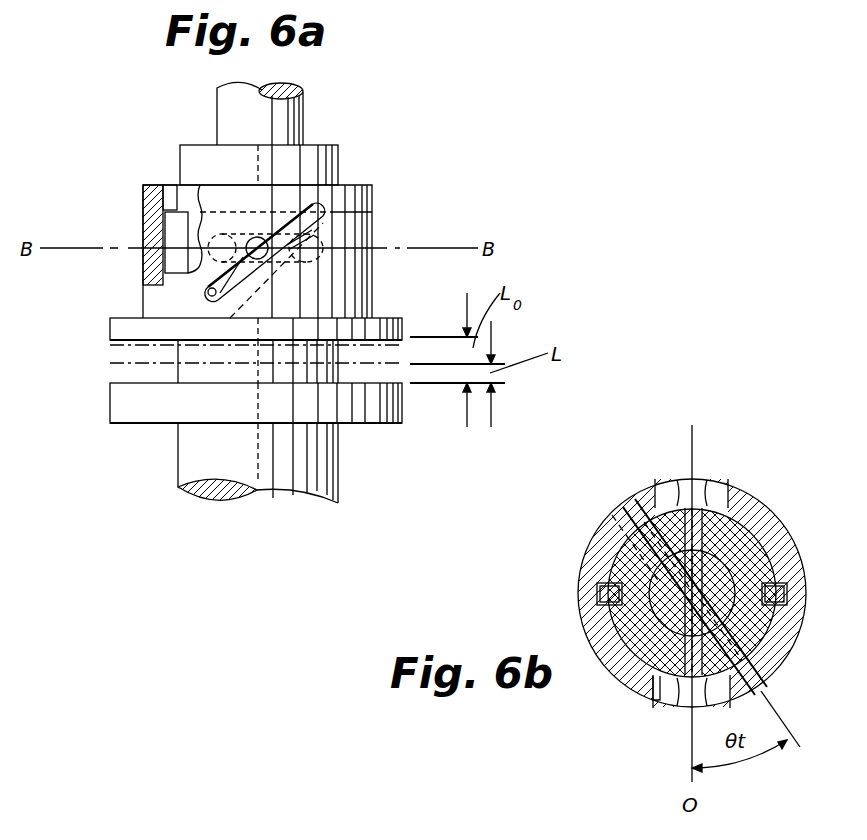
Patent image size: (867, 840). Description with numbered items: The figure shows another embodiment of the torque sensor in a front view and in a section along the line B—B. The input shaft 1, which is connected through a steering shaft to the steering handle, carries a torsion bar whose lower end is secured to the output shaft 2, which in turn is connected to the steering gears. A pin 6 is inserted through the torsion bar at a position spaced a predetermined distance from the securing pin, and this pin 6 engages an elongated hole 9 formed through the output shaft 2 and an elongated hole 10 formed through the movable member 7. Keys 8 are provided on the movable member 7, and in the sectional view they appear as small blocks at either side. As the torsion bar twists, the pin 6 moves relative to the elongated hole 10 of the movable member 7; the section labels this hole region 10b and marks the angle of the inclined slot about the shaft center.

In FIG. 6a, the input shaft 1 is at (302, 116).
In FIG. 6b, the input shaft 1 is at (720, 553).
In FIG. 6a, the output shaft 2 is at (338, 162).
In FIG. 6b, the output shaft 2 is at (758, 558).
In FIG. 6a, the pin 6 is at (252, 242).
In FIG. 6b, the pin 6 is at (703, 498).
In FIG. 6a, the movable member 7 is at (372, 225).
In FIG. 6b, the movable member 7 is at (590, 617).
In FIG. 6a, the keys 8 is at (175, 222).
In FIG. 6b, the keys 8 is at (600, 585).
In FIG. 6a, the elongated hole 9 is at (213, 296).
In FIG. 6b, the elongated hole 9 is at (642, 645).
In FIG. 6a, the elongated hole 10 is at (207, 288).
In FIG. 6b, the pin 10b is at (660, 700).